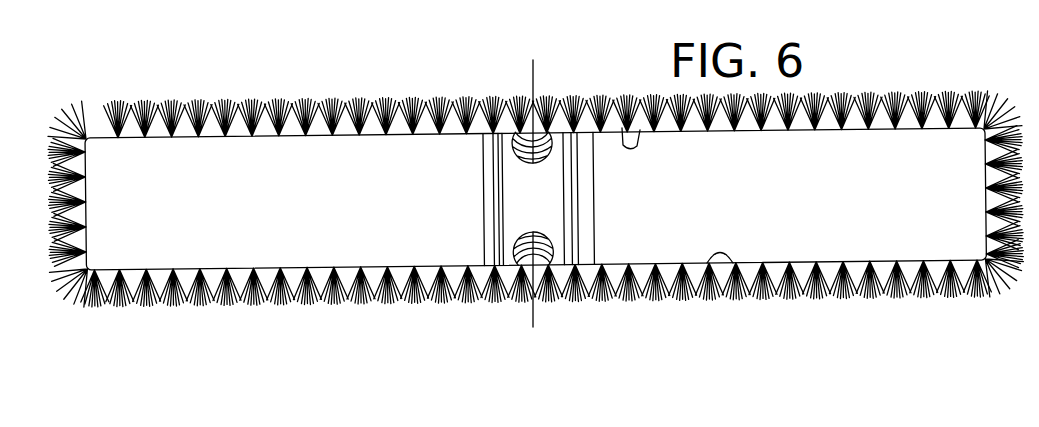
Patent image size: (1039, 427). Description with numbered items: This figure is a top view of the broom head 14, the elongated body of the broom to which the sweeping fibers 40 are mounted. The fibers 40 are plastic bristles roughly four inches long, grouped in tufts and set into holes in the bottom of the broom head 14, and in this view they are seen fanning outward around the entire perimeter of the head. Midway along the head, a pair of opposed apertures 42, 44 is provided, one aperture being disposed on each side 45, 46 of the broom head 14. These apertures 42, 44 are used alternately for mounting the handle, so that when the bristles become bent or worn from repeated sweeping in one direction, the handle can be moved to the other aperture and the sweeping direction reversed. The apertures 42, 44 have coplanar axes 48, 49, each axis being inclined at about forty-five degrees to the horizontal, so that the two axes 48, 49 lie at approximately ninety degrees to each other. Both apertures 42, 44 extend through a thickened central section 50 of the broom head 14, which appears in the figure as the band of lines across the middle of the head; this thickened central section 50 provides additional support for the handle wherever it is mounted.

The broom head 14 is at (779, 204).
The fibers 40 is at (281, 100).
The aperture 42 is at (545, 263).
The aperture 44 is at (516, 130).
The side of the broom head 45 is at (733, 263).
The side of the broom head 46 is at (622, 128).
The axis 48 is at (532, 318).
The axis 49 is at (535, 75).
The thickened central section 50 is at (512, 212).